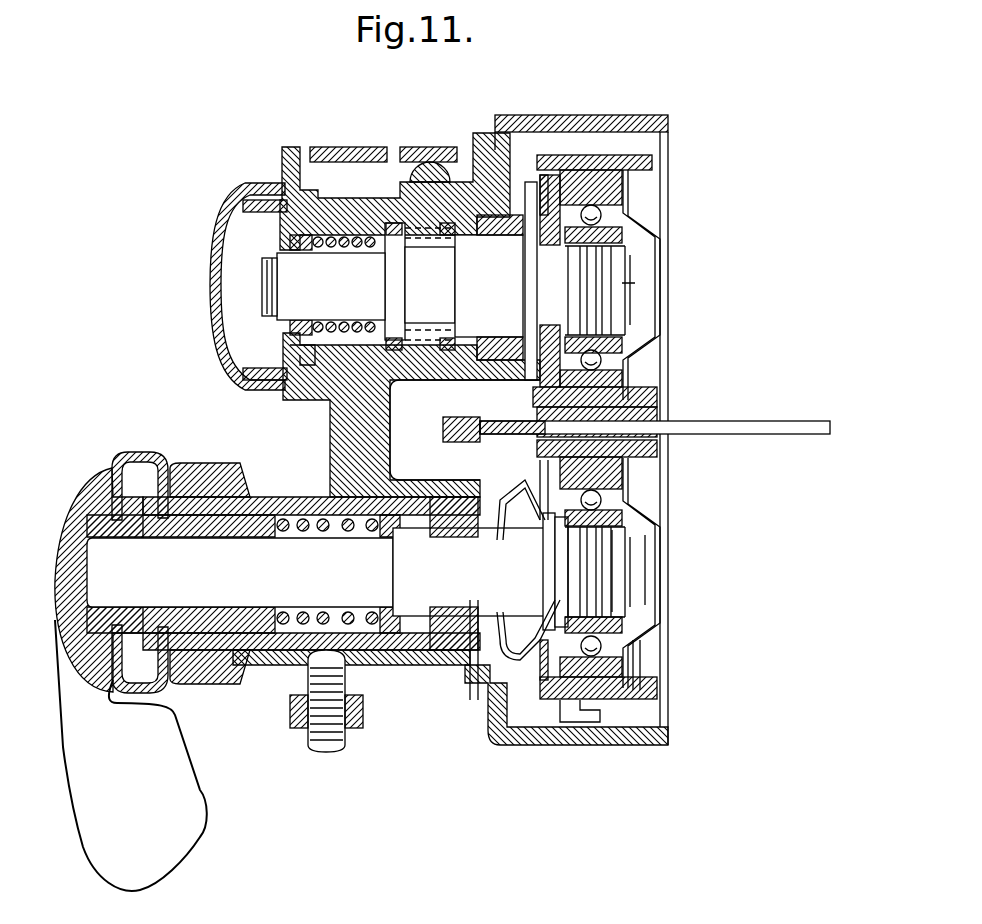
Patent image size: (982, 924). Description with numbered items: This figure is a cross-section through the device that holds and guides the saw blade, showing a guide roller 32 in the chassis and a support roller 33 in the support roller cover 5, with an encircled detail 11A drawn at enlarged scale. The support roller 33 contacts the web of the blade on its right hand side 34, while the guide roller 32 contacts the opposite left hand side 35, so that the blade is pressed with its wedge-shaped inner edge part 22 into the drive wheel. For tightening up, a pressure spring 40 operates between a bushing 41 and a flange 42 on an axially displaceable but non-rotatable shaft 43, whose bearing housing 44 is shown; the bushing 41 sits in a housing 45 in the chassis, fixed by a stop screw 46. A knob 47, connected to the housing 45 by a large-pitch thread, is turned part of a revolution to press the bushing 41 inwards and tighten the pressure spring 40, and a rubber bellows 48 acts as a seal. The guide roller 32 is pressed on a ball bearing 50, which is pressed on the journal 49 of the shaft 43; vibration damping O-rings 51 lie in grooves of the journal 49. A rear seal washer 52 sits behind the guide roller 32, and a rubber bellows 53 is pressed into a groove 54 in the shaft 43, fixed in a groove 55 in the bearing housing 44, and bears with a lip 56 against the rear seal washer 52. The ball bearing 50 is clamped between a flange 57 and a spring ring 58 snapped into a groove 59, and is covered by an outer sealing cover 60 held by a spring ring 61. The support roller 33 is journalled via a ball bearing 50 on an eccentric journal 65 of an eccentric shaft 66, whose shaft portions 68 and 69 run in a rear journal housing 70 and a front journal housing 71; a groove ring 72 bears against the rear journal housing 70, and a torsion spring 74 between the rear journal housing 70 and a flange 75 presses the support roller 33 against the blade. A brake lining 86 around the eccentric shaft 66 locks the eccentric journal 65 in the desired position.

The support roller cover 5 is at (540, 140).
The encircled detail 11A is at (655, 382).
The wedge-shaped inner edge part 22 is at (660, 428).
The guide roller 32 is at (640, 692).
The support roller 33 is at (650, 165).
The right hand side 34 is at (490, 425).
The left hand side 35 is at (490, 445).
The pressure spring 40 is at (295, 510).
The bushing 41 is at (250, 463).
The flange 42 is at (400, 532).
The shaft 43 is at (385, 590).
The bearing housing 44 is at (447, 625).
The housing 45 is at (265, 650).
The stop screw 46 is at (330, 745).
The knob 47 is at (62, 612).
The bellows 48 is at (135, 452).
The journal 49 is at (622, 570).
The ball bearing 50 is at (630, 190).
The vibration damping O-ring 51 is at (607, 587).
The rear seal washer 52 is at (578, 210).
The rubber bellows 53 is at (520, 690).
The groove 54 is at (545, 555).
The groove 55 is at (470, 640).
The lip 56 is at (552, 640).
The flange 57 is at (558, 582).
The spring ring 58 is at (648, 522).
The groove 59 is at (642, 552).
The outer sealing cover 60 is at (655, 500).
The spring ring 61 is at (642, 682).
The eccentric journal 65 is at (620, 283).
The eccentric shaft 66 is at (258, 298).
The shaft portion 68 is at (305, 278).
The shaft portion 69 is at (489, 286).
The rear journal housing 70 is at (488, 215).
The front journal housing 71 is at (300, 230).
The groove ring 72 is at (258, 238).
The torsion spring 74 is at (325, 232).
The flange 75 is at (392, 250).
The brake lining 86 is at (428, 225).